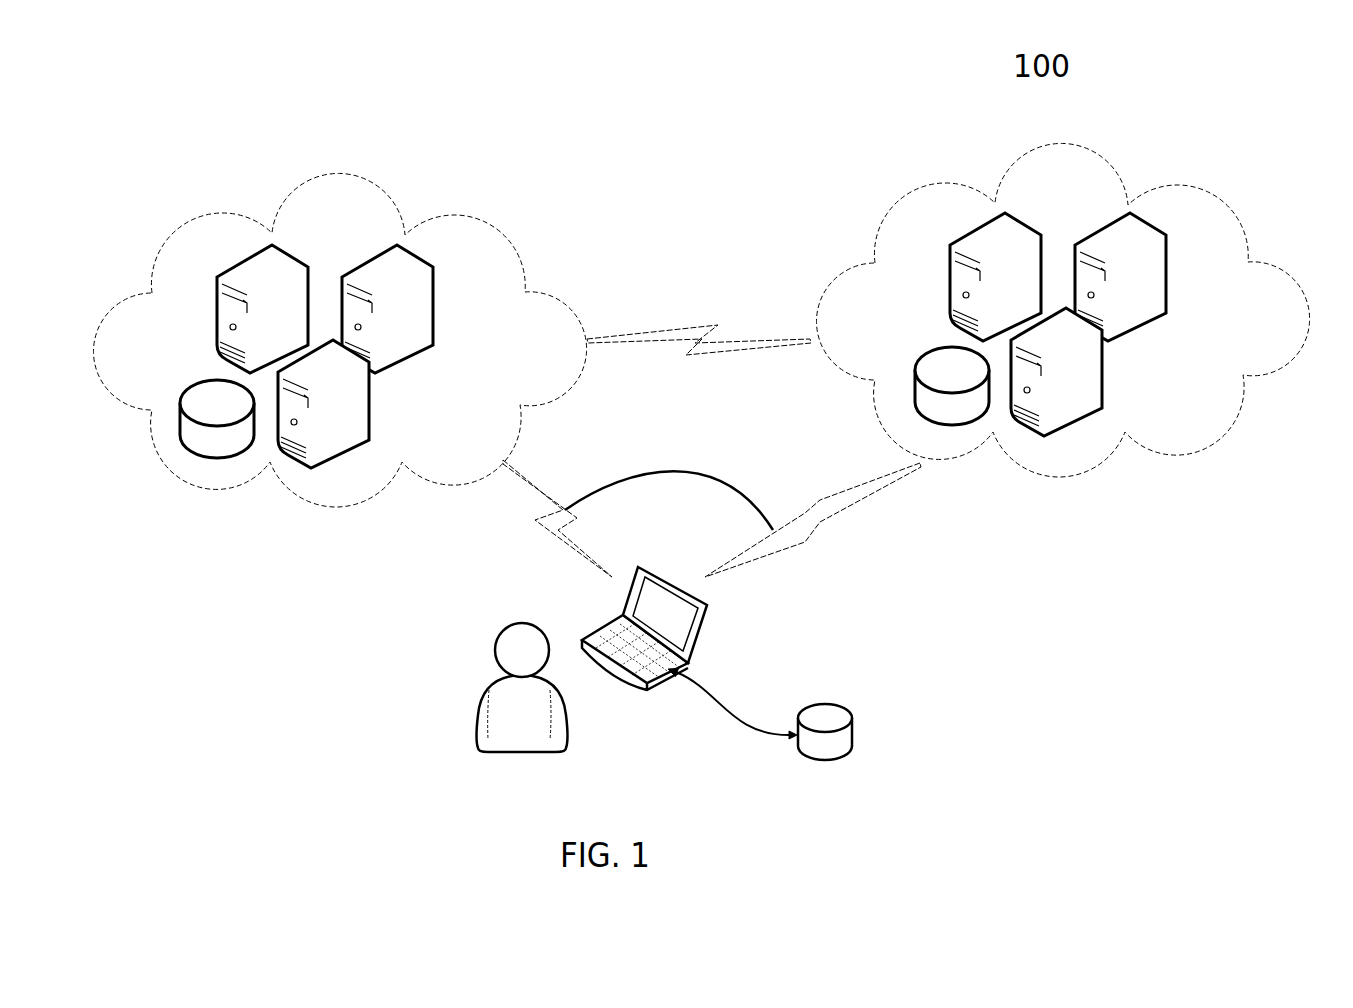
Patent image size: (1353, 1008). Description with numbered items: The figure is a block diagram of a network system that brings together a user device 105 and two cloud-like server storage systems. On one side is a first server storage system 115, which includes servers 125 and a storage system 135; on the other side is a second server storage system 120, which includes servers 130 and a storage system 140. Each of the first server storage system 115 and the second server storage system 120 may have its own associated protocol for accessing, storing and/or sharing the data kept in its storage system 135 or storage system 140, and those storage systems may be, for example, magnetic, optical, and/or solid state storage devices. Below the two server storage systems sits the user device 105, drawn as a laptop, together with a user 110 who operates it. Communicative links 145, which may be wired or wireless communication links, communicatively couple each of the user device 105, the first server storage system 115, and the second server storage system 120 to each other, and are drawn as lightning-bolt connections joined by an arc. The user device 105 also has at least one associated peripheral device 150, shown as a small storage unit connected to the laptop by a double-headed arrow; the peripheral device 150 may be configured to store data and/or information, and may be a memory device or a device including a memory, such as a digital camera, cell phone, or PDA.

The user device 105 is at (705, 622).
The user 110 is at (567, 723).
The first server storage system 115 is at (368, 183).
The second server storage system 120 is at (1097, 153).
The servers 125 is at (322, 360).
The servers 130 is at (1053, 330).
The storage system 135 is at (212, 392).
The storage system 140 is at (943, 360).
The communicative links 145 is at (690, 353).
The peripheral device 150 is at (818, 718).